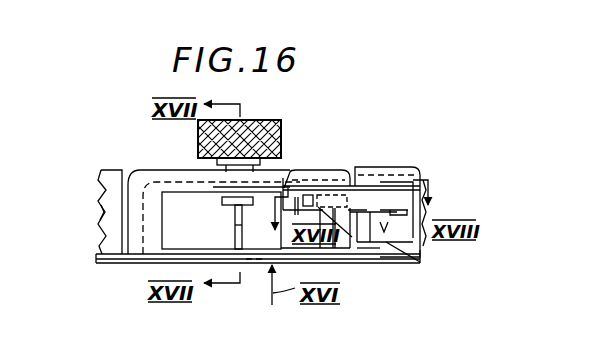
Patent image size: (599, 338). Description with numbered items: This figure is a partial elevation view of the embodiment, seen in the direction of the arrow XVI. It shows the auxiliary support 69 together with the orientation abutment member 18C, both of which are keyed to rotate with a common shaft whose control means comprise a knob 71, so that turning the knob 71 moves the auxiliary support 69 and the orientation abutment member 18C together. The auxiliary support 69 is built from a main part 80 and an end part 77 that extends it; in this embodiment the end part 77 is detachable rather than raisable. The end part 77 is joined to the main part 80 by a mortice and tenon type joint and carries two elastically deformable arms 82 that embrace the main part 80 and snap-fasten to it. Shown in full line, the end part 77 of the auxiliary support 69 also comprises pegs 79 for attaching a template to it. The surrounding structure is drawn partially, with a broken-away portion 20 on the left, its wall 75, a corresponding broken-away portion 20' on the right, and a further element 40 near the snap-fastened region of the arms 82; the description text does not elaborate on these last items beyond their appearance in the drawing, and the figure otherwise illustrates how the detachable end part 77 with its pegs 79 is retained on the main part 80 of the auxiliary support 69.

The housing wall 20 is at (81, 192).
The wall portion 75 is at (100, 213).
The orientation abutment member 18C is at (215, 188).
The knob 71 is at (282, 120).
The latch 40 is at (318, 160).
The main part 80 is at (294, 172).
The elastically deformable arms 82 is at (318, 185).
The end part 77 is at (372, 195).
The housing wall portion 20' is at (396, 177).
The auxiliary support 69 is at (367, 247).
The pegs 79 is at (408, 247).